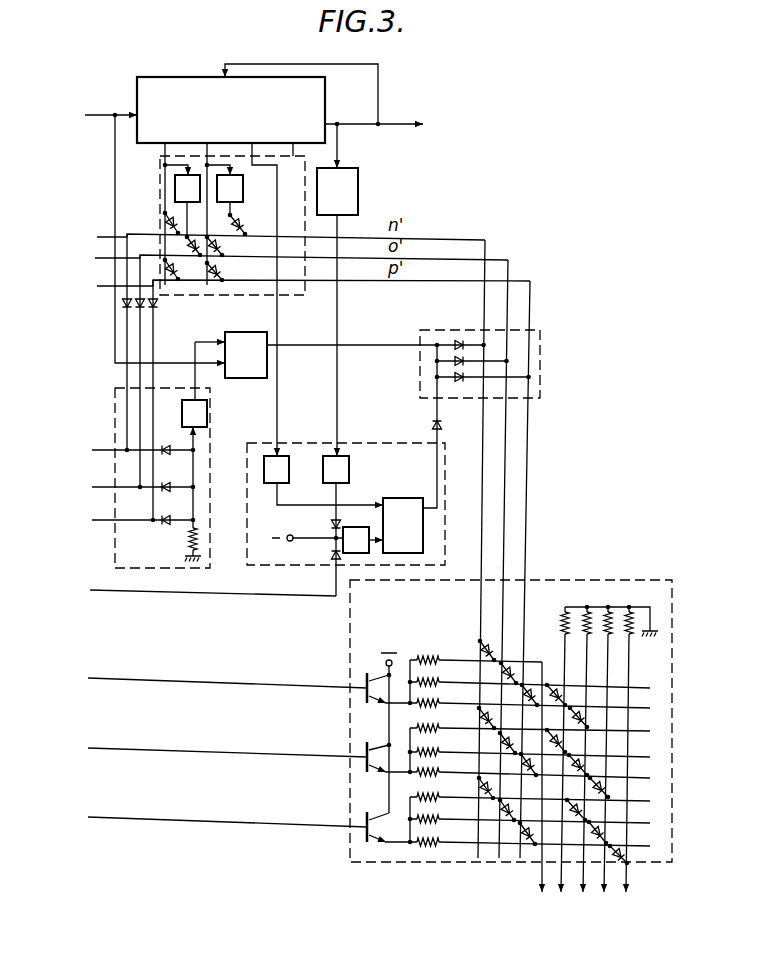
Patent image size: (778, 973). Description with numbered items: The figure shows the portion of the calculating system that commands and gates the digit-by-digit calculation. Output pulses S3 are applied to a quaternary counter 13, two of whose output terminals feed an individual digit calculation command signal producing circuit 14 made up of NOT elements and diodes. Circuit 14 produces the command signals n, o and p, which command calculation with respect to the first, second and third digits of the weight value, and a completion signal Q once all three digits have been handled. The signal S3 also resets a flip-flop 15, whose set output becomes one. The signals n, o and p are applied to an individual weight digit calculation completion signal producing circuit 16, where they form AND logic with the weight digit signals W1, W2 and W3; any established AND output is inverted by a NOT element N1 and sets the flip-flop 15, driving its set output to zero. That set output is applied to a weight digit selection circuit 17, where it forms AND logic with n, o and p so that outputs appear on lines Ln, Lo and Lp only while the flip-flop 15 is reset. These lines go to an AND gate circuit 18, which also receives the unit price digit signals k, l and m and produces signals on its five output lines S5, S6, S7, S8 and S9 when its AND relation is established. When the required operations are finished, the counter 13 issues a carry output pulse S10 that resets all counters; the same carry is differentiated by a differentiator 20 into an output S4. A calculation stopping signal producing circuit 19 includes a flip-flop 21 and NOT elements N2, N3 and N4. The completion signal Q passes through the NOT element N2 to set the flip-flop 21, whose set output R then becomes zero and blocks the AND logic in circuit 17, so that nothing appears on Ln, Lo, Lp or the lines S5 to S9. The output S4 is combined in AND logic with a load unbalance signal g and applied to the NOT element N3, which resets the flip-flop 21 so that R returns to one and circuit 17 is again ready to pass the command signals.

The quaternary counter 13 is at (137, 83).
The individual digit calculation command signal producing circuit 14 is at (284, 296).
The flip-flop 15 is at (252, 332).
The individual weight digit calculation completion signal producing circuit 16 is at (154, 455).
The weight digit selection circuit 17 is at (541, 351).
The AND gate circuit 18 is at (511, 740).
The calculation stopping signal producing circuit 19 is at (385, 503).
The differentiator 20 is at (355, 168).
The flip-flop 21 is at (407, 498).
The output pulses S3 is at (143, 235).
The differentiator output S4 is at (338, 297).
The carry output pulse S10 is at (354, 124).
The output signal S5 is at (531, 793).
The output signal S6 is at (552, 779).
The output signal S7 is at (575, 779).
The output signal S8 is at (596, 779).
The output signal S9 is at (618, 779).
The NOT element N1 is at (208, 413).
The NOT element N2 is at (268, 483).
The NOT element N3 is at (338, 456).
The NOT element N4 is at (348, 527).
The weight digit signal W1 is at (128, 451).
The weight digit signal W2 is at (128, 488).
The weight digit signal W3 is at (128, 521).
The completion signal Q is at (279, 397).
The set output R is at (442, 412).
The output line Ln is at (482, 500).
The output line Lo is at (505, 463).
The output line Lp is at (522, 427).
The calculation command signal n is at (281, 239).
The calculation command signal o is at (293, 262).
The calculation command signal p is at (303, 286).
The load unbalance signal g is at (204, 594).
The unit price digit signal k is at (217, 682).
The unit price digit signal l is at (219, 752).
The unit price digit signal m is at (214, 822).